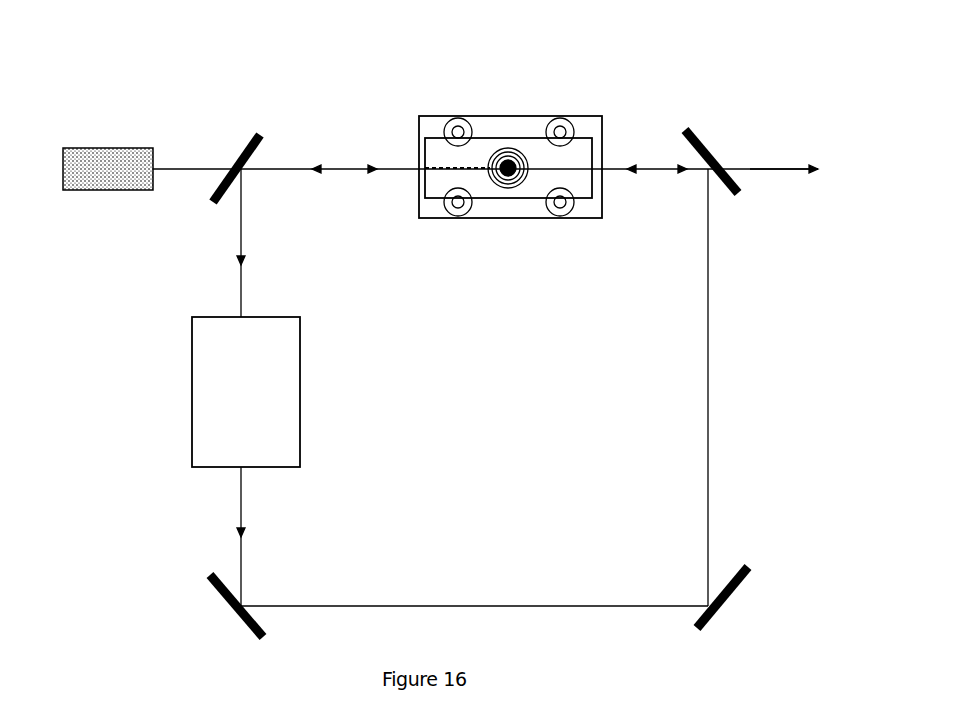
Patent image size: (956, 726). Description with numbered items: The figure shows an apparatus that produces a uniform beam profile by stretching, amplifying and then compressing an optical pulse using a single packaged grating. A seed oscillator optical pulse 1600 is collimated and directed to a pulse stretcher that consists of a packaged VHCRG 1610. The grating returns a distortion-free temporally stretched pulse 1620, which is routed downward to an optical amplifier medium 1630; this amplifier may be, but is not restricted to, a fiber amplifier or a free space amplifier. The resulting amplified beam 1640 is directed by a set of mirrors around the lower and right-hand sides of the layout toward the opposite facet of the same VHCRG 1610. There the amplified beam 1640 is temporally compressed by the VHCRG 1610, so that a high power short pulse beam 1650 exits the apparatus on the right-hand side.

The seed oscillator optical pulse 1600 is at (80, 148).
The packaged VHCRG 1610 is at (476, 114).
The temporally stretched pulse 1620 is at (241, 250).
The optical amplifier medium 1630 is at (192, 407).
The amplified beam 1640 is at (241, 507).
The high power short pulse beam 1650 is at (760, 167).